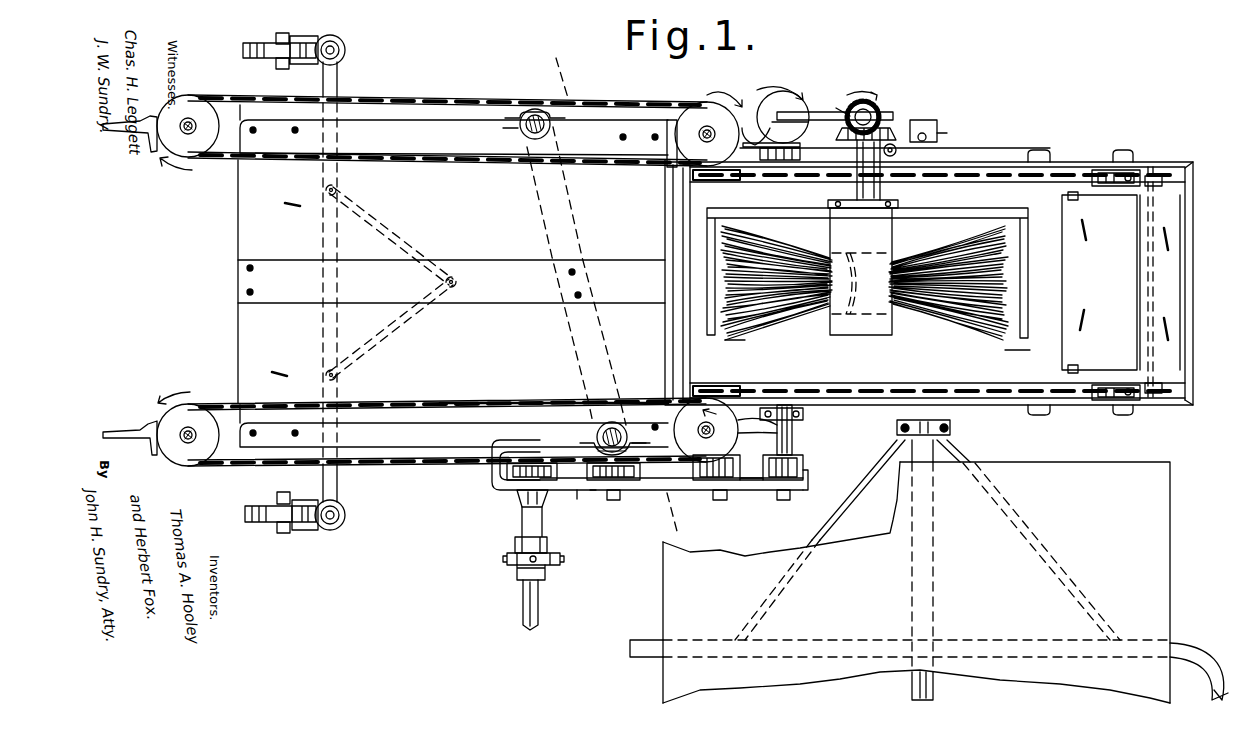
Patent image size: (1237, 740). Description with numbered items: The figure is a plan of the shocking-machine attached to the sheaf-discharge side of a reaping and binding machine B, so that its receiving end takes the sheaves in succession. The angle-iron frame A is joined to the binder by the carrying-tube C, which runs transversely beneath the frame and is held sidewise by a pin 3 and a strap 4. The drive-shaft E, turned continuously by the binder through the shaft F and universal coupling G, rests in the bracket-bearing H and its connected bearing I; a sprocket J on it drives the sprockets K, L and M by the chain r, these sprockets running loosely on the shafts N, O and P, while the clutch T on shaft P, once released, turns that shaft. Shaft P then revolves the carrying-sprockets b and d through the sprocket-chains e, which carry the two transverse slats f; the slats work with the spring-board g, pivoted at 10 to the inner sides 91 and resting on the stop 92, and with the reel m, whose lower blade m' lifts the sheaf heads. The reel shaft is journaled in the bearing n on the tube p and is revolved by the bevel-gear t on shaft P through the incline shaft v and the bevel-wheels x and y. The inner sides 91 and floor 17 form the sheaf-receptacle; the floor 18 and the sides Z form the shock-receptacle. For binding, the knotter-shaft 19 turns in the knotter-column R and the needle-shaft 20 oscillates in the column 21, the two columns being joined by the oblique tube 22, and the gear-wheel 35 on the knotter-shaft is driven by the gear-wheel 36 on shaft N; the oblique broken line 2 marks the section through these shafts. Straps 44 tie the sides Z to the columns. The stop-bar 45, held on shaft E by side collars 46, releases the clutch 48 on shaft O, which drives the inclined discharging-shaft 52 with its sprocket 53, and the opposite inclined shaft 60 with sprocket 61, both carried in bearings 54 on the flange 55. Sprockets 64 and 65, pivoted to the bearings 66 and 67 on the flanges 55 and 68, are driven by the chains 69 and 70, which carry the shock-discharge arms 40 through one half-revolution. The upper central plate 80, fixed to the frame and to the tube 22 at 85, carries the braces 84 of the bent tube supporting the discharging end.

The oblique broken line 2 is at (616, 299).
The pin 3 is at (947, 133).
The strap 4 is at (896, 428).
The pivot of spring-board 10 is at (1078, 200).
The floor of sheaf-receptacle 17 is at (745, 341).
The floor of shock-receptacle 18 is at (250, 218).
The knotter-shaft 19 is at (624, 436).
The needle-shaft 20 is at (520, 128).
The vertical column 21 is at (537, 108).
The oblique tube 22 is at (545, 229).
The gear-wheel 35 is at (640, 449).
The gear-wheel 36 is at (600, 492).
The shock-discharge arms 40 is at (128, 124).
The straps 44 is at (590, 449).
The stop-bar 45 is at (339, 79).
The side collars 46 is at (262, 45).
The clutch 48 is at (760, 452).
The inclined discharging-shaft 52 is at (706, 430).
The sprocket 53 is at (706, 430).
The projecting bearing 54 is at (668, 120).
The flange 55 is at (432, 412).
The inclined shaft 60 is at (688, 95).
The sprocket 61 is at (707, 123).
The sprocket 64 is at (195, 462).
The sprocket 65 is at (200, 102).
The projecting bearing 66 is at (238, 452).
The projecting bearing 67 is at (236, 104).
The flange 68 is at (432, 122).
The chain 69 is at (440, 402).
The chain 70 is at (447, 98).
The upper central plate 80 is at (244, 285).
The braces 84 is at (408, 238).
The attachment point 85 is at (573, 294).
The inner sides 91 is at (712, 182).
The stop 92 is at (1190, 162).
The angle-iron frame A is at (990, 160).
The reaping and binding machine B is at (929, 571).
The carrying-tube C is at (922, 120).
The drive-shaft E is at (521, 524).
The shaft F is at (523, 605).
The universal coupling G is at (505, 562).
The bracket-bearing H is at (500, 440).
The bearing I is at (574, 505).
The sprocket J is at (500, 486).
The sprocket K is at (632, 492).
The sprocket L is at (702, 484).
The sprocket M is at (808, 480).
The shaft N is at (612, 501).
The shaft O is at (721, 501).
The shaft P is at (784, 501).
The knotter-column R is at (611, 434).
The clutch T is at (800, 456).
The sides Z is at (1058, 160).
The carrying-sprockets b is at (670, 176).
The carrying-sprockets d is at (1138, 170).
The sprocket-chains e is at (808, 183).
The transverse slats f is at (680, 231).
The spring-board g is at (1198, 283).
The reel m is at (848, 273).
The lower blade m' is at (864, 278).
The transverse bearing n is at (900, 196).
The tube p is at (893, 146).
The chain r is at (753, 482).
The bevel-gear t is at (794, 126).
The incline shaft v is at (826, 110).
The upper bevel-wheel x is at (840, 105).
The bevel-wheel y is at (840, 128).